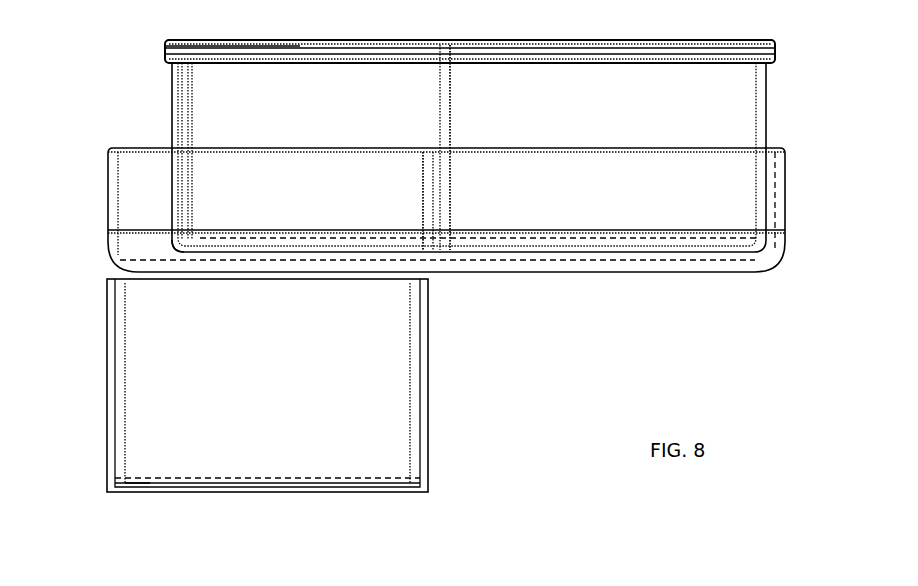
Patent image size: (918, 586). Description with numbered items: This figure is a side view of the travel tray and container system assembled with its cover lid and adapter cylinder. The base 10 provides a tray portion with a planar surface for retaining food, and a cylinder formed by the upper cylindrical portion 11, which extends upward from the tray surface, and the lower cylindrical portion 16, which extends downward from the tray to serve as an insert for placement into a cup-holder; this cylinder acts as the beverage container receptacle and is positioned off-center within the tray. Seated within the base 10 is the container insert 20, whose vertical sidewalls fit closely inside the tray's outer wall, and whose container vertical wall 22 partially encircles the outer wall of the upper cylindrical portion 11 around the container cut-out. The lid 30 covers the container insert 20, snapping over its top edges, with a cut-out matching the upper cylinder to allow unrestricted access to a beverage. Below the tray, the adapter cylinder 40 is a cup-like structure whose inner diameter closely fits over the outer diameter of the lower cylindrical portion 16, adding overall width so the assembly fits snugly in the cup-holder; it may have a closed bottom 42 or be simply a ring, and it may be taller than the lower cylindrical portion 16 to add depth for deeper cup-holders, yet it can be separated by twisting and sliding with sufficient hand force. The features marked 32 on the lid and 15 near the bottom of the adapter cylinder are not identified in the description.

The base 10 is at (717, 205).
The upper cylindrical portion 11 is at (430, 200).
The bottom hinge 15 is at (150, 495).
The lower cylindrical portion 16 is at (140, 270).
The container insert 20 is at (722, 137).
The container vertical wall 22 is at (450, 130).
The lid 30 is at (740, 48).
The lid rim 32 is at (240, 58).
The adapter cylinder 40 is at (225, 405).
The closed bottom 42 is at (258, 494).